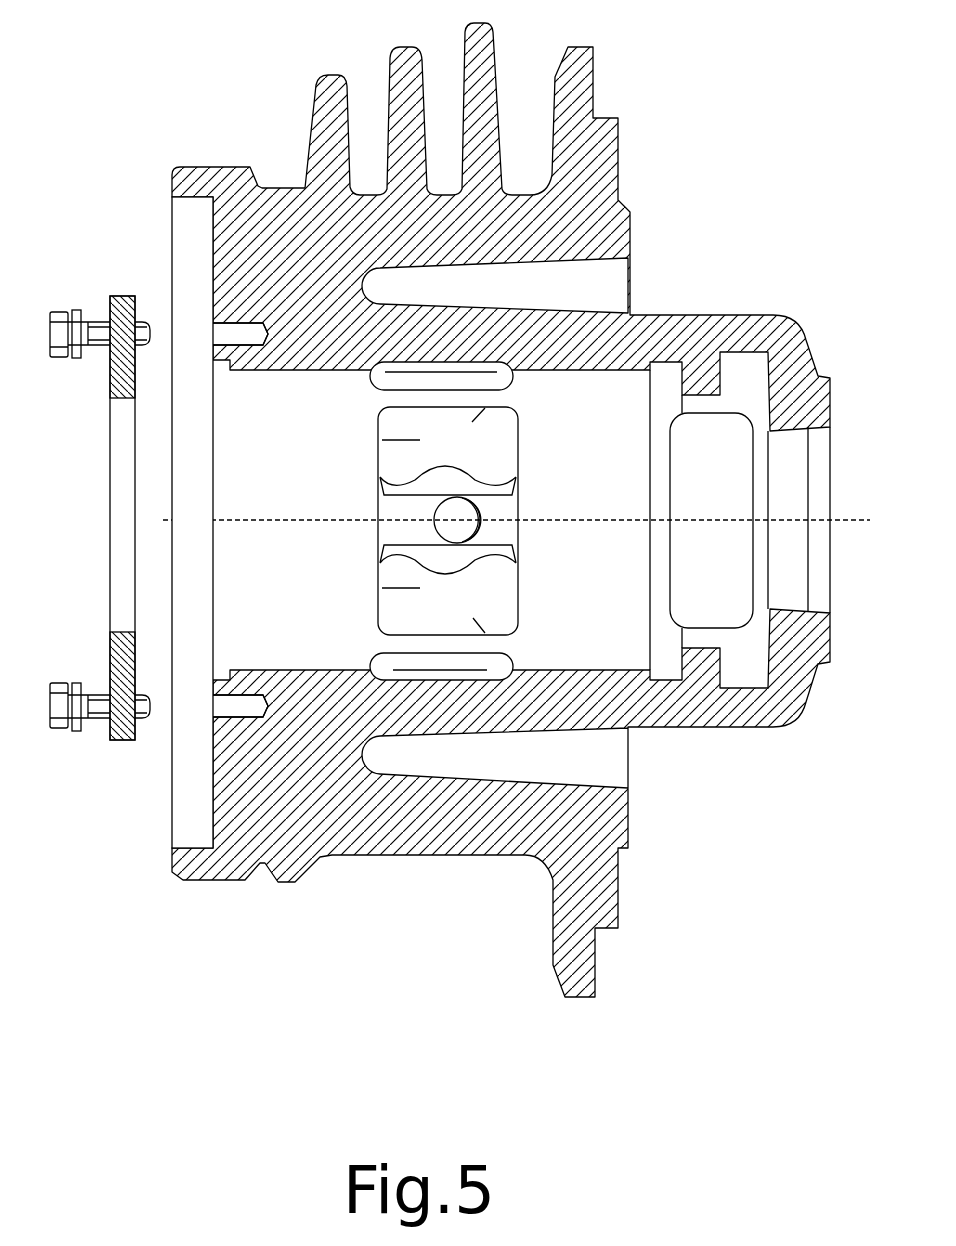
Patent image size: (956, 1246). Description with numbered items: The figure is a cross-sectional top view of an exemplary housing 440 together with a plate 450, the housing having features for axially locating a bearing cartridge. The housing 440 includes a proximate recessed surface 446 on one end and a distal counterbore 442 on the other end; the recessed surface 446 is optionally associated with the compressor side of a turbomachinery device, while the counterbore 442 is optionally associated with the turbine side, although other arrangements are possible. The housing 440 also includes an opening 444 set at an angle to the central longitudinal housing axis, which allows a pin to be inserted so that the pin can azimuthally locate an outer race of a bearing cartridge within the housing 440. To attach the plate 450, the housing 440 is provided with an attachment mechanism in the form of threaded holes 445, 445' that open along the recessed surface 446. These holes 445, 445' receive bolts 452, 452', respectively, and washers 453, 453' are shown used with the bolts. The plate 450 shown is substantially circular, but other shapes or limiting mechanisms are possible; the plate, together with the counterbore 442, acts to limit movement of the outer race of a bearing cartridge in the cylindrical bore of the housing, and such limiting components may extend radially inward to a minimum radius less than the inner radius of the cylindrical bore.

The housing 440 is at (320, 74).
The distal counterbore 442 is at (683, 396).
The opening 444 is at (437, 513).
The threaded hole 445 is at (181, 285).
The threaded hole 445' is at (181, 759).
The proximate recessed surface 446 is at (210, 242).
The plate 450 is at (110, 634).
The bolt 452 is at (100, 308).
The bolt 452' is at (100, 734).
The washer 453 is at (47, 351).
The washer 453' is at (42, 692).